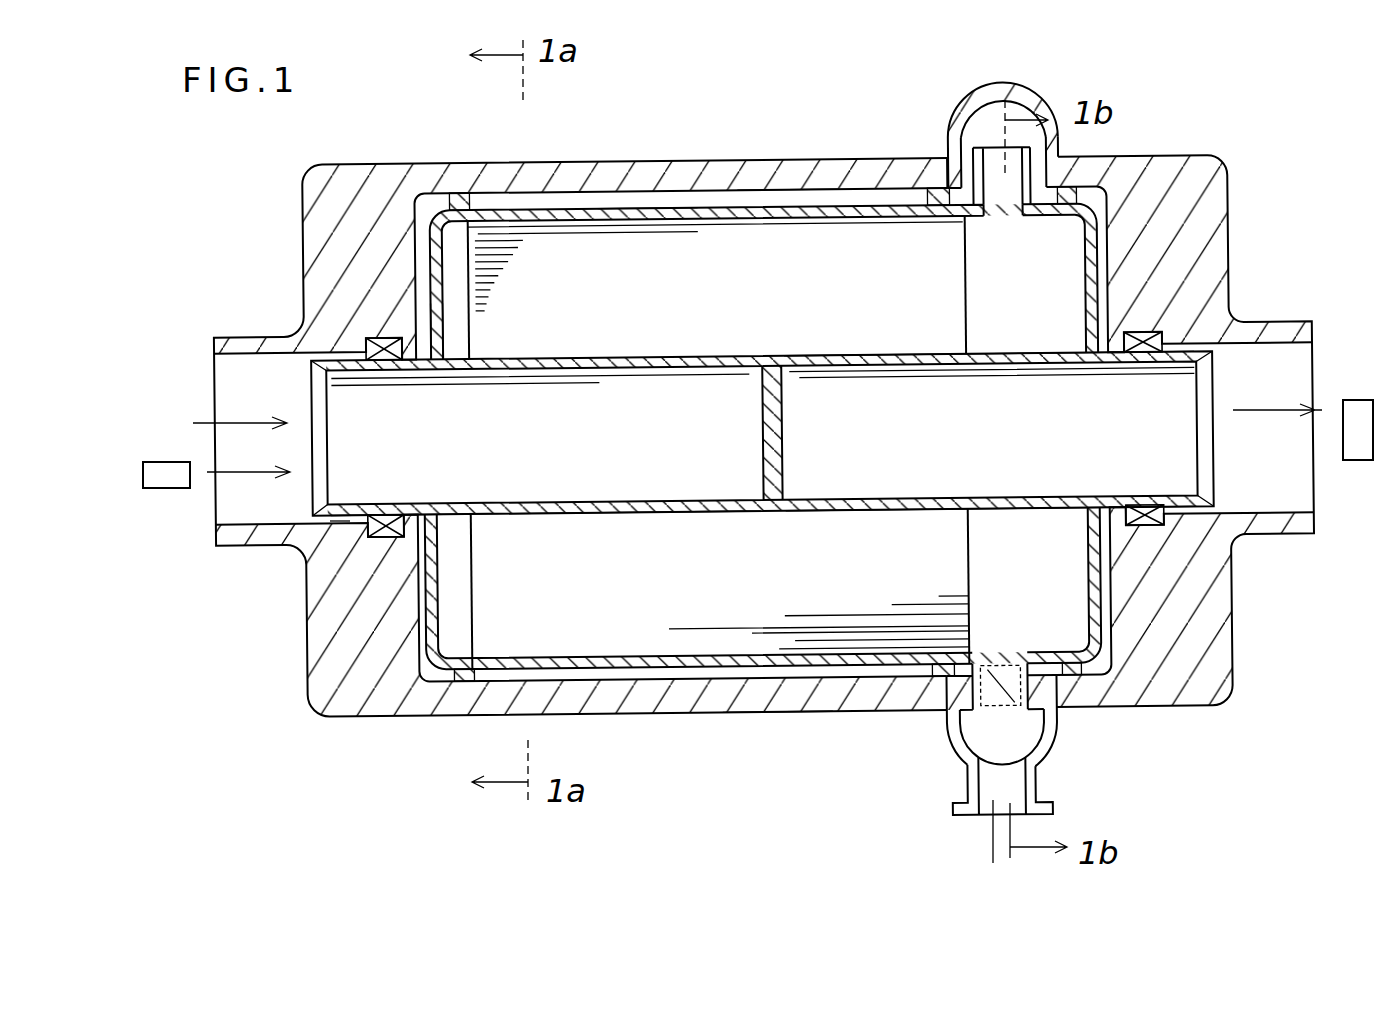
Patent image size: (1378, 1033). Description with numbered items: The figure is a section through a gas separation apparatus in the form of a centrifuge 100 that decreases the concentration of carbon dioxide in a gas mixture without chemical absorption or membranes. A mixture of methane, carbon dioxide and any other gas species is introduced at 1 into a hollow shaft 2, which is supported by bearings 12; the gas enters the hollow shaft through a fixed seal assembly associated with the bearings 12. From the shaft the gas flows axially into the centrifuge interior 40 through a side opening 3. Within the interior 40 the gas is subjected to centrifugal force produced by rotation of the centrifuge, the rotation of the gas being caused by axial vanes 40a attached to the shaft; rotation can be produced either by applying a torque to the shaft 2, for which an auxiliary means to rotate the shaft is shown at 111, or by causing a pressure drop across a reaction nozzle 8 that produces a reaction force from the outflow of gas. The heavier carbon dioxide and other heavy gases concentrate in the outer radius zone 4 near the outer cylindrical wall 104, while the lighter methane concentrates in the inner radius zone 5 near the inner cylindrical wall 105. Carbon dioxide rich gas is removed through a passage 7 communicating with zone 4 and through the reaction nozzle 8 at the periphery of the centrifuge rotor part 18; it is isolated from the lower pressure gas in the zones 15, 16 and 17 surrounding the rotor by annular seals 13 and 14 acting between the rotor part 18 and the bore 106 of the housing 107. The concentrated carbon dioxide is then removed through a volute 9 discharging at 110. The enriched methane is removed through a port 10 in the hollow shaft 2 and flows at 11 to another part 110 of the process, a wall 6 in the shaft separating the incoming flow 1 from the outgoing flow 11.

The gas mixture inlet flow 1 is at (222, 422).
The hollow shaft 2 is at (337, 527).
The side opening 3 is at (530, 360).
The outer radius zone 4 is at (727, 225).
The inner radius zone 5 is at (752, 520).
The wall 6 is at (765, 455).
The passage 7 is at (1020, 196).
The reaction nozzle 8 is at (965, 145).
The volute 9 is at (988, 118).
The port 10 is at (1000, 356).
The enriched methane outflow 11 is at (1265, 408).
The bearings 12 is at (378, 335).
The annular seal 13 is at (460, 190).
The annular seal 14 is at (1068, 653).
The lower pressure gas zone 15 is at (511, 205).
The lower pressure gas zone 16 is at (425, 203).
The lower pressure gas zone 17 is at (1140, 200).
The centrifuge rotor part 18 is at (976, 222).
The centrifuge interior 40 is at (772, 312).
The axial vanes 40a is at (471, 620).
The centrifuge 100 is at (428, 288).
The outer cylindrical wall 104 is at (660, 207).
The inner cylindrical wall 105 is at (868, 510).
The bore 106 is at (802, 194).
The housing 107 is at (776, 700).
The discharge / process part 110 is at (1343, 445).
The auxiliary means to rotate the shaft 111 is at (180, 490).